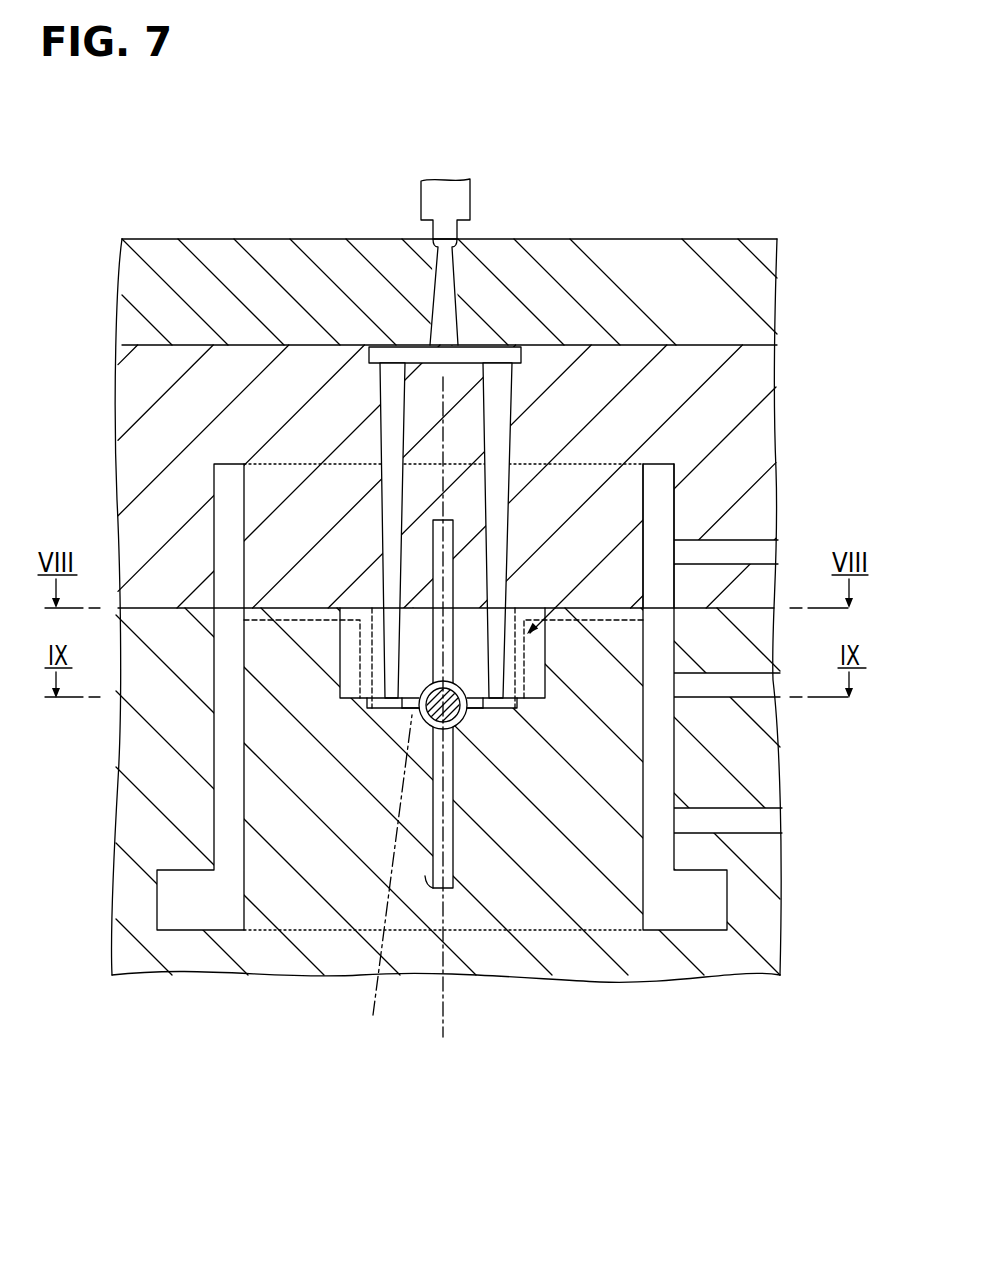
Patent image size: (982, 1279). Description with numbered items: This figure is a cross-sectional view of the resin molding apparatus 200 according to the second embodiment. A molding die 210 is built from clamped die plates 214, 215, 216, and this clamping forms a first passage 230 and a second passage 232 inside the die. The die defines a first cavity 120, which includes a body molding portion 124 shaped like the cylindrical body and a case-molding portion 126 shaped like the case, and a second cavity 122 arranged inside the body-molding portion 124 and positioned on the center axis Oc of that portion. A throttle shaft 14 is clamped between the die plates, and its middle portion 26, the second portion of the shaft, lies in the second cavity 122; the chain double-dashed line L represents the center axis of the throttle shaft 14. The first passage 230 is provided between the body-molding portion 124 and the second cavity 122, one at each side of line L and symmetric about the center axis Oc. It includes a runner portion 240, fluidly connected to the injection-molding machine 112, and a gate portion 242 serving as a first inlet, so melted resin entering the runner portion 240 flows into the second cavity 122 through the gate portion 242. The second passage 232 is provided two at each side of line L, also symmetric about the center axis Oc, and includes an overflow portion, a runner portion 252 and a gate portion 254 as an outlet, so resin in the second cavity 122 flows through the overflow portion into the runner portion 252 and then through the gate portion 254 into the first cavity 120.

The resin molding apparatus 200 is at (108, 222).
The injection-molding machine 112 is at (460, 192).
The die plate 216 is at (773, 311).
The die plate 215 is at (758, 441).
The die plate 214 is at (752, 725).
The molding die 210 is at (104, 911).
The runner portion 240 is at (383, 385).
The first cavity 120 is at (826, 480).
The body molding portion 124 is at (663, 535).
The case-molding portion 126 is at (773, 555).
The second cavity 122 is at (433, 720).
The throttle shaft 14 is at (447, 874).
The middle portion 26 is at (456, 727).
The first passage 230 is at (377, 711).
The gate portion 242 is at (412, 708).
The second passage 232 is at (547, 653).
The runner portion 252 is at (350, 693).
The gate portion 254 is at (340, 640).
The line L is at (386, 883).
The center axis Oc is at (443, 1028).